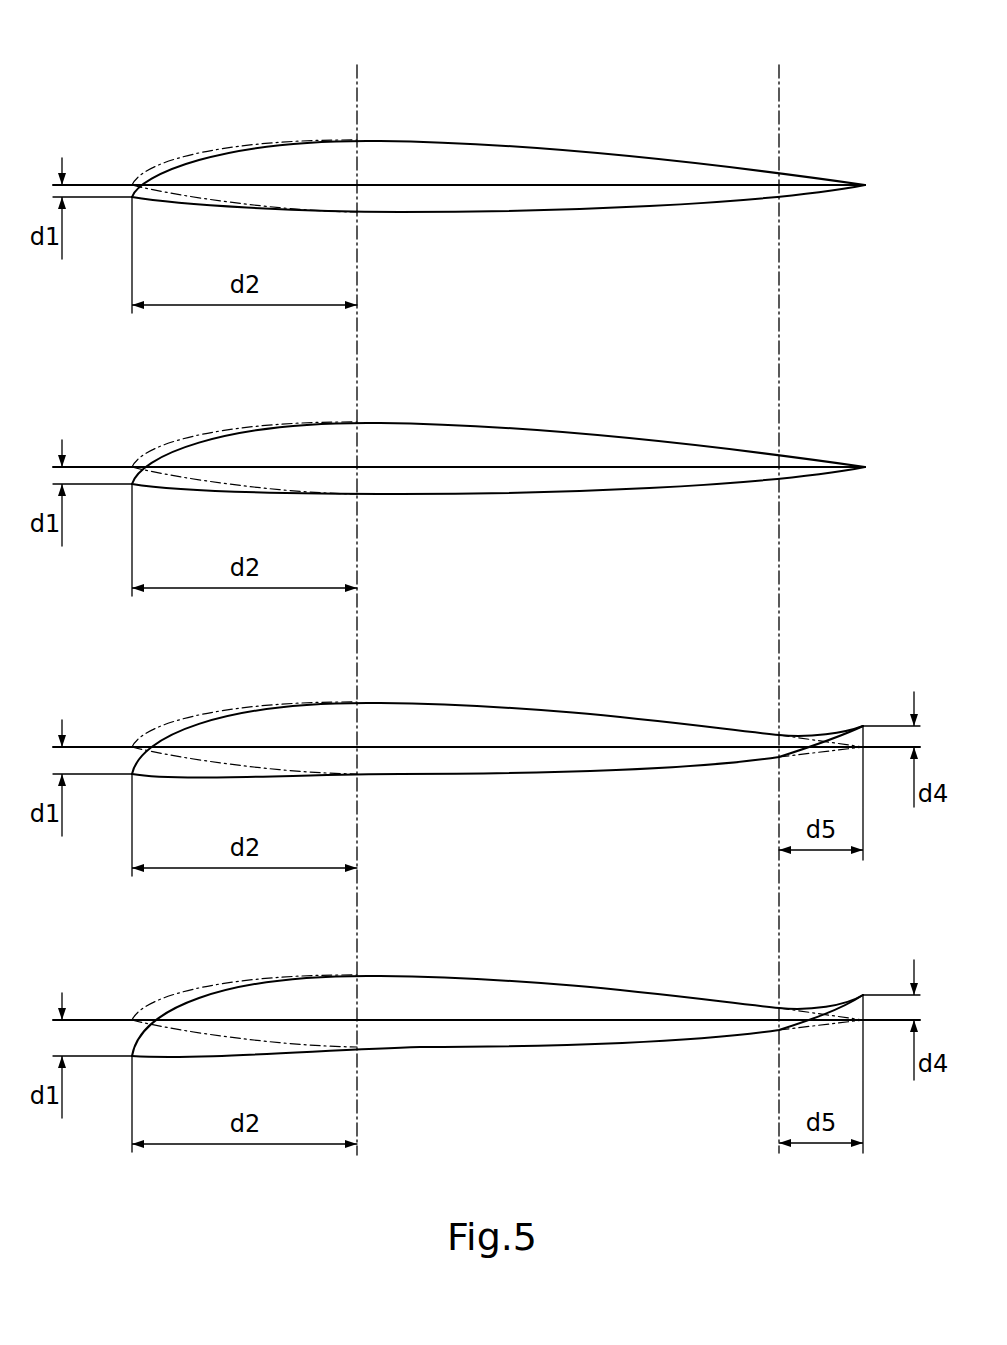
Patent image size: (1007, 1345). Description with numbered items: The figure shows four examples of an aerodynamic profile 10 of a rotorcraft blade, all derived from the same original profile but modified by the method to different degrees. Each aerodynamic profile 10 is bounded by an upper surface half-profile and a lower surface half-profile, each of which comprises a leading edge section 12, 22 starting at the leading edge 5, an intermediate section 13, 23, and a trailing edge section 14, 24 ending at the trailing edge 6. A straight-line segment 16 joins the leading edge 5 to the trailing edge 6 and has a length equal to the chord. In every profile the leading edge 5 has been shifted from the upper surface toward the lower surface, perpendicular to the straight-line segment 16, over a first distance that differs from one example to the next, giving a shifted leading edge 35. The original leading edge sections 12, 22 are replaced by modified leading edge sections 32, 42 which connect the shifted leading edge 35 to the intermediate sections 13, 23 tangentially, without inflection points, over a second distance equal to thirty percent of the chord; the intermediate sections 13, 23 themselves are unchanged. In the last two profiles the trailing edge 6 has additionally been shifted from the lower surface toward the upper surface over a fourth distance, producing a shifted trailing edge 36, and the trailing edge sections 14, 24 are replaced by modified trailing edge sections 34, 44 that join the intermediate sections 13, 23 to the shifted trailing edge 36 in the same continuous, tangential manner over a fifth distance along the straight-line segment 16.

The aerodynamic profile 10 is at (588, 86).
The leading edge 5 is at (132, 185).
The trailing edge 6 is at (865, 185).
The leading edge section of the upper surface half-profile 12 is at (168, 157).
The intermediate section of the upper surface half-profile 13 is at (512, 147).
The trailing edge section of the upper surface half-profile 14 is at (805, 175).
The straight-line segment 16 is at (381, 185).
The leading edge section of the lower surface half-profile 22 is at (183, 203).
The intermediate section of the lower surface half-profile 23 is at (485, 212).
The trailing edge section of the lower surface half-profile 24 is at (805, 197).
The modified leading edge section of the upper surface half-profile 32 is at (155, 167).
The modified trailing edge section of the upper surface half-profile 34 is at (842, 722).
The shifted leading edge 35 is at (132, 197).
The shifted trailing edge 36 is at (863, 726).
The modified leading edge section of the lower surface half-profile 42 is at (167, 207).
The modified trailing edge section of the lower surface half-profile 44 is at (853, 747).